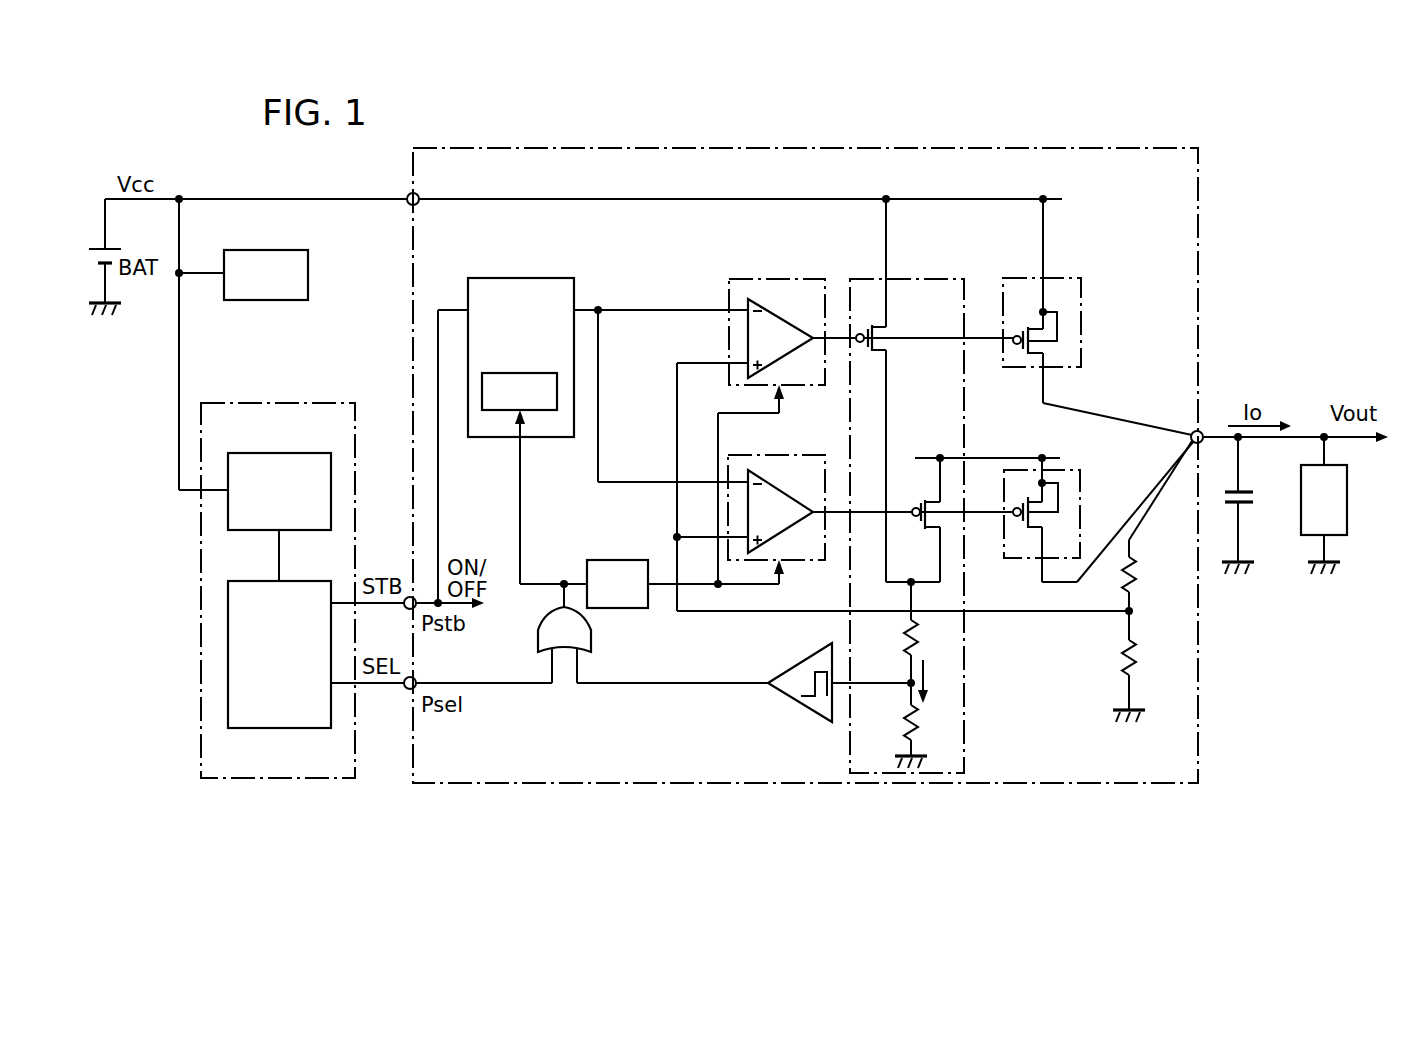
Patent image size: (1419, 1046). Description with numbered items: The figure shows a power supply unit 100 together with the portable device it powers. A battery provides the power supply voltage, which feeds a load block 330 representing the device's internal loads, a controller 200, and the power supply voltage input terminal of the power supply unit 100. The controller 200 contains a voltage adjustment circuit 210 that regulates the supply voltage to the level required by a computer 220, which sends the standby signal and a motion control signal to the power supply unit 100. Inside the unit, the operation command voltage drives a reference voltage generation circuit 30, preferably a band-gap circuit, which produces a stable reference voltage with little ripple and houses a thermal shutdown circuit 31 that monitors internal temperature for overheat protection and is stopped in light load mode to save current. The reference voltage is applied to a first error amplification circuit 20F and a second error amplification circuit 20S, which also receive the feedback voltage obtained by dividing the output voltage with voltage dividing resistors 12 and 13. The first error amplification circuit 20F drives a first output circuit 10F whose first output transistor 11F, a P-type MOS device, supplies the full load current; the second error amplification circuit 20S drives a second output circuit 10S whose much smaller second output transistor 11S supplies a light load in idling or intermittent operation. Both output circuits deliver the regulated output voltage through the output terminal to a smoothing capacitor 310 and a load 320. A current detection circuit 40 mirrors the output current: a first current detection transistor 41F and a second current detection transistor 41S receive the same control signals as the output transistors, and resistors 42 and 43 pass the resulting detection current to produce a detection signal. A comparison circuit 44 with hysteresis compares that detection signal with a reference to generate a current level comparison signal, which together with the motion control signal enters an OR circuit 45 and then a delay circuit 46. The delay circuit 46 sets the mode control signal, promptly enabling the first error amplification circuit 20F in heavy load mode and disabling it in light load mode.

The power supply unit 100 is at (1200, 240).
The controller 200 is at (283, 401).
The voltage adjustment circuit 210 is at (305, 452).
The computer 220 is at (305, 578).
The load block 330 is at (308, 276).
The load 320 is at (1347, 498).
The smoothing capacitor 310 is at (1248, 484).
The reference voltage generation circuit 30 is at (515, 277).
The thermal shutdown circuit 31 is at (498, 411).
The second error amplification circuit 20S is at (775, 278).
The first error amplification circuit 20F is at (808, 451).
The current detection circuit 40 is at (930, 279).
The second current detection transistor 41S is at (888, 334).
The first current detection transistor 41F is at (917, 500).
The second output circuit 10S is at (1081, 300).
The first output circuit 10F is at (1080, 486).
The second output transistor 11S is at (1020, 330).
The first output transistor 11F is at (1020, 505).
The voltage dividing resistor 12 is at (1138, 579).
The voltage dividing resistor 13 is at (1138, 659).
The resistor 42 is at (904, 642).
The resistor 43 is at (904, 726).
The comparison circuit 44 is at (790, 711).
The OR circuit 45 is at (592, 642).
The delay circuit 46 is at (615, 558).